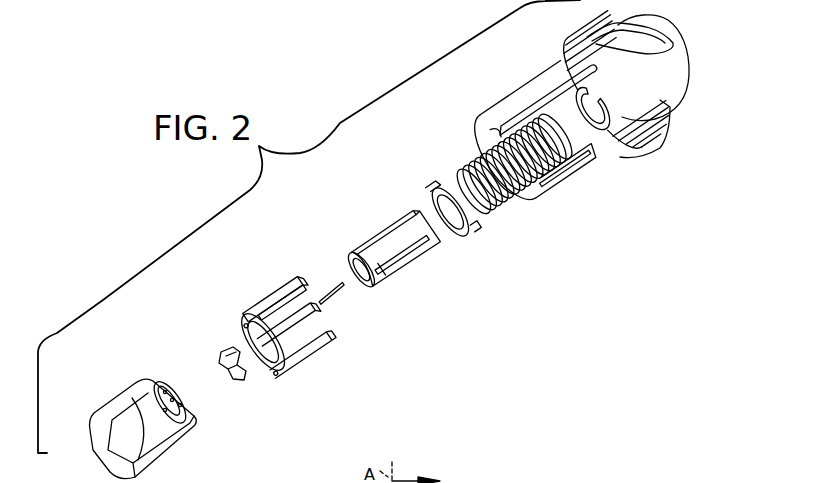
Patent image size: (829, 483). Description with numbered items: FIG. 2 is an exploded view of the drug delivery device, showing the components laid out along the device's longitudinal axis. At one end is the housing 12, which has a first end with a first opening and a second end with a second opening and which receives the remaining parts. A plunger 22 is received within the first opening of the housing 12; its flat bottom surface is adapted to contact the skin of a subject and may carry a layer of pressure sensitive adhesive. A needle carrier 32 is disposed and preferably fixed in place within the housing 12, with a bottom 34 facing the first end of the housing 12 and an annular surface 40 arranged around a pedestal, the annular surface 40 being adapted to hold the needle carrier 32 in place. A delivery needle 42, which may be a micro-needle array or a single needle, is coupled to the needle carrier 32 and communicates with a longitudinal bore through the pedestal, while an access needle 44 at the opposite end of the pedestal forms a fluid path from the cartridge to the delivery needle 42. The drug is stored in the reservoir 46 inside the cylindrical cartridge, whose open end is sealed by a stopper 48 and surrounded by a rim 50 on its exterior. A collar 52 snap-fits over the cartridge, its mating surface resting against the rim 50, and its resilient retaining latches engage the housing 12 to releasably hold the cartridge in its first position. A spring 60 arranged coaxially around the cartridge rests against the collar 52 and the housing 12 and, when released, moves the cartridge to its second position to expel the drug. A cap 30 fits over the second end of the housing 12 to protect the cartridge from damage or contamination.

The housing 12 is at (567, 185).
The plunger 22 is at (120, 407).
The cap 30 is at (657, 46).
The needle carrier 32 is at (302, 283).
The bottom of the needle carrier 34 is at (265, 301).
The annular surface 40 is at (280, 297).
The delivery needle 42 is at (242, 367).
The access needle 44 is at (335, 282).
The reservoir 46 is at (399, 236).
The stopper 48 is at (390, 270).
The rim 50 is at (367, 253).
The collar 52 is at (452, 182).
The spring 60 is at (493, 220).